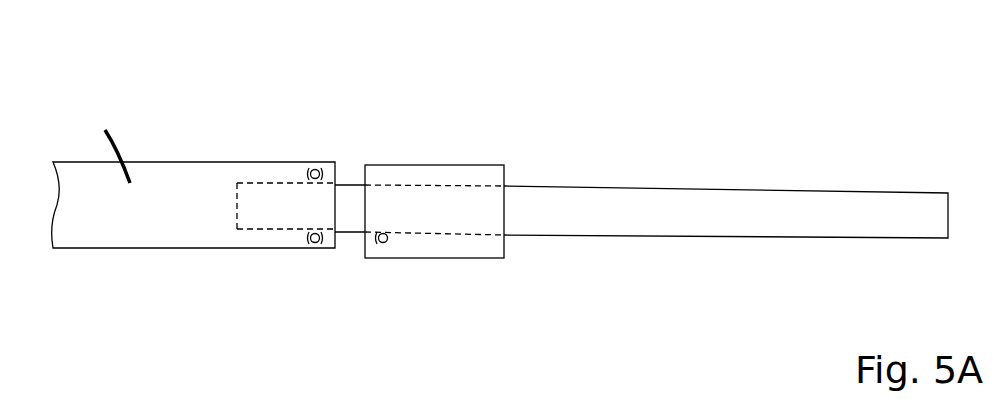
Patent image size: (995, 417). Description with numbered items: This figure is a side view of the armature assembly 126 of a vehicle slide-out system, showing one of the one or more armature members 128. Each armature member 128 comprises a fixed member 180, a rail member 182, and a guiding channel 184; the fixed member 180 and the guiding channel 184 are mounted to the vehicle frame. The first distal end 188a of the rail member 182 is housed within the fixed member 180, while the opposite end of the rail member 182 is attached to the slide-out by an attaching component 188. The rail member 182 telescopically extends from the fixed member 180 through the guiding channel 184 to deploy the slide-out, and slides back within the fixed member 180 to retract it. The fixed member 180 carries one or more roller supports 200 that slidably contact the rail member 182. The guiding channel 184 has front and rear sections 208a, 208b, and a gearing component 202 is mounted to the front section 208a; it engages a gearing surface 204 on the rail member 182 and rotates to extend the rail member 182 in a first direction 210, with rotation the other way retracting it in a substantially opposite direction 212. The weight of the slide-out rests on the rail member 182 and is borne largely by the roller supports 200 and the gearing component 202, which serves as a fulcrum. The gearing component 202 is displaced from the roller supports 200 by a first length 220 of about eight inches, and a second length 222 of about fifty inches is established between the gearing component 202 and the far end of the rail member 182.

The armature assembly 126 is at (156, 104).
The armature member 128 is at (103, 138).
The fixed member 180 is at (163, 240).
The rail member 182 is at (606, 223).
The guiding channel 184 is at (474, 170).
The attaching component 188 is at (937, 222).
The first distal end 188a is at (255, 198).
The roller supports 200 is at (315, 168).
The gearing component 202 is at (388, 245).
The gearing surface 204 is at (785, 237).
The front section 208a is at (378, 203).
The rear section 208b is at (492, 220).
The first direction 210 is at (703, 145).
The return direction 212 is at (718, 360).
The first length 220 is at (316, 283).
The second length 222 is at (948, 327).